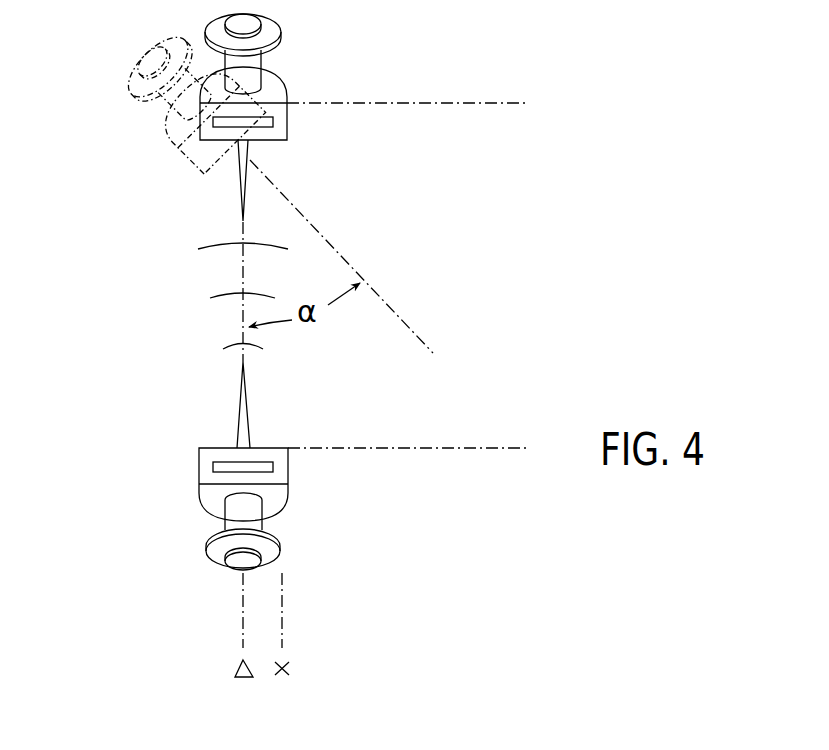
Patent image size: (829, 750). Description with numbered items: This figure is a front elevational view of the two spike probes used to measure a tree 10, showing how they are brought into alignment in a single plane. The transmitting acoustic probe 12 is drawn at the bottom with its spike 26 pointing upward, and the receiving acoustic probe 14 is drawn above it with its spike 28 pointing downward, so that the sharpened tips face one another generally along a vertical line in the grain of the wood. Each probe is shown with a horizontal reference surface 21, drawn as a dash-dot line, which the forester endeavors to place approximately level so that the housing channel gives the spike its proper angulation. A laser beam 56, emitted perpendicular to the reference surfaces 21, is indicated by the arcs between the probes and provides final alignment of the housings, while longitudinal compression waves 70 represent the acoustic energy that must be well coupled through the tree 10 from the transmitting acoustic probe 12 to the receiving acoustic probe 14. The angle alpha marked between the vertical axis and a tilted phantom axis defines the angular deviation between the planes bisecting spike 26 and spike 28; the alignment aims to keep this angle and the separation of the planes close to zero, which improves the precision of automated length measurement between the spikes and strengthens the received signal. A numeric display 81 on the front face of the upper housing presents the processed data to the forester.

The tree 10 is at (144, 188).
The transmitting acoustic probe 12 is at (319, 492).
The receiving acoustic probe 14 is at (309, 53).
The reference surface 21 is at (432, 105).
The spike 26 is at (248, 393).
The spike 28 is at (238, 193).
The laser beam 56 is at (242, 265).
The longitudinal compression waves 70 is at (233, 347).
The numeric display 81 is at (288, 123).